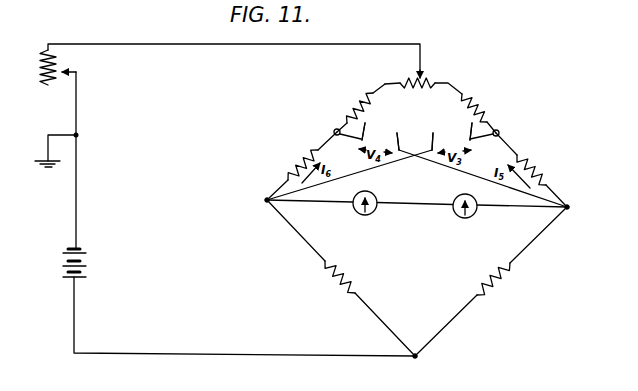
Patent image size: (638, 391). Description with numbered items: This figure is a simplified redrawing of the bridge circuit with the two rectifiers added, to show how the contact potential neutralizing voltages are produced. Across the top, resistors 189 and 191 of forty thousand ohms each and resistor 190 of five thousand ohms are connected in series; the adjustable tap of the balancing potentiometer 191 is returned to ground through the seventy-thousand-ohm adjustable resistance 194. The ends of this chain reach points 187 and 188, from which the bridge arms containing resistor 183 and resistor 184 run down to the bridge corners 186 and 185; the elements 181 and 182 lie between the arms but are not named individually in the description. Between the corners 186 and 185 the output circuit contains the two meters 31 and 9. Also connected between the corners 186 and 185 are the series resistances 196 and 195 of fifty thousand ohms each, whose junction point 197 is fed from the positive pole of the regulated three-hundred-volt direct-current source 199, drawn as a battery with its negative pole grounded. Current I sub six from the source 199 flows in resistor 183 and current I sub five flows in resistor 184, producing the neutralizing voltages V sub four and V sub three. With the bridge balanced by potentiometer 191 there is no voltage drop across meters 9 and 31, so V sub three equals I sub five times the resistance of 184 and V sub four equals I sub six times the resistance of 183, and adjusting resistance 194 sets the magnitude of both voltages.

The adjustable resistance 194 is at (59, 62).
The source of direct current 199 is at (88, 263).
The balancing potentiometer 191 is at (428, 79).
The resistor 189 is at (357, 102).
The resistor 190 is at (487, 119).
The terminal 187 is at (335, 130).
The terminal 188 is at (516, 125).
The electrode pair 181 is at (380, 133).
The electrode pair 182 is at (452, 134).
The resistor 183 is at (292, 161).
The resistor 184 is at (542, 171).
The bridge corner 186 is at (266, 200).
The bridge corner 185 is at (570, 206).
The meter 31 is at (373, 213).
The meter 9 is at (473, 217).
The resistance 196 is at (326, 283).
The resistance 195 is at (494, 292).
The junction point 197 is at (420, 358).